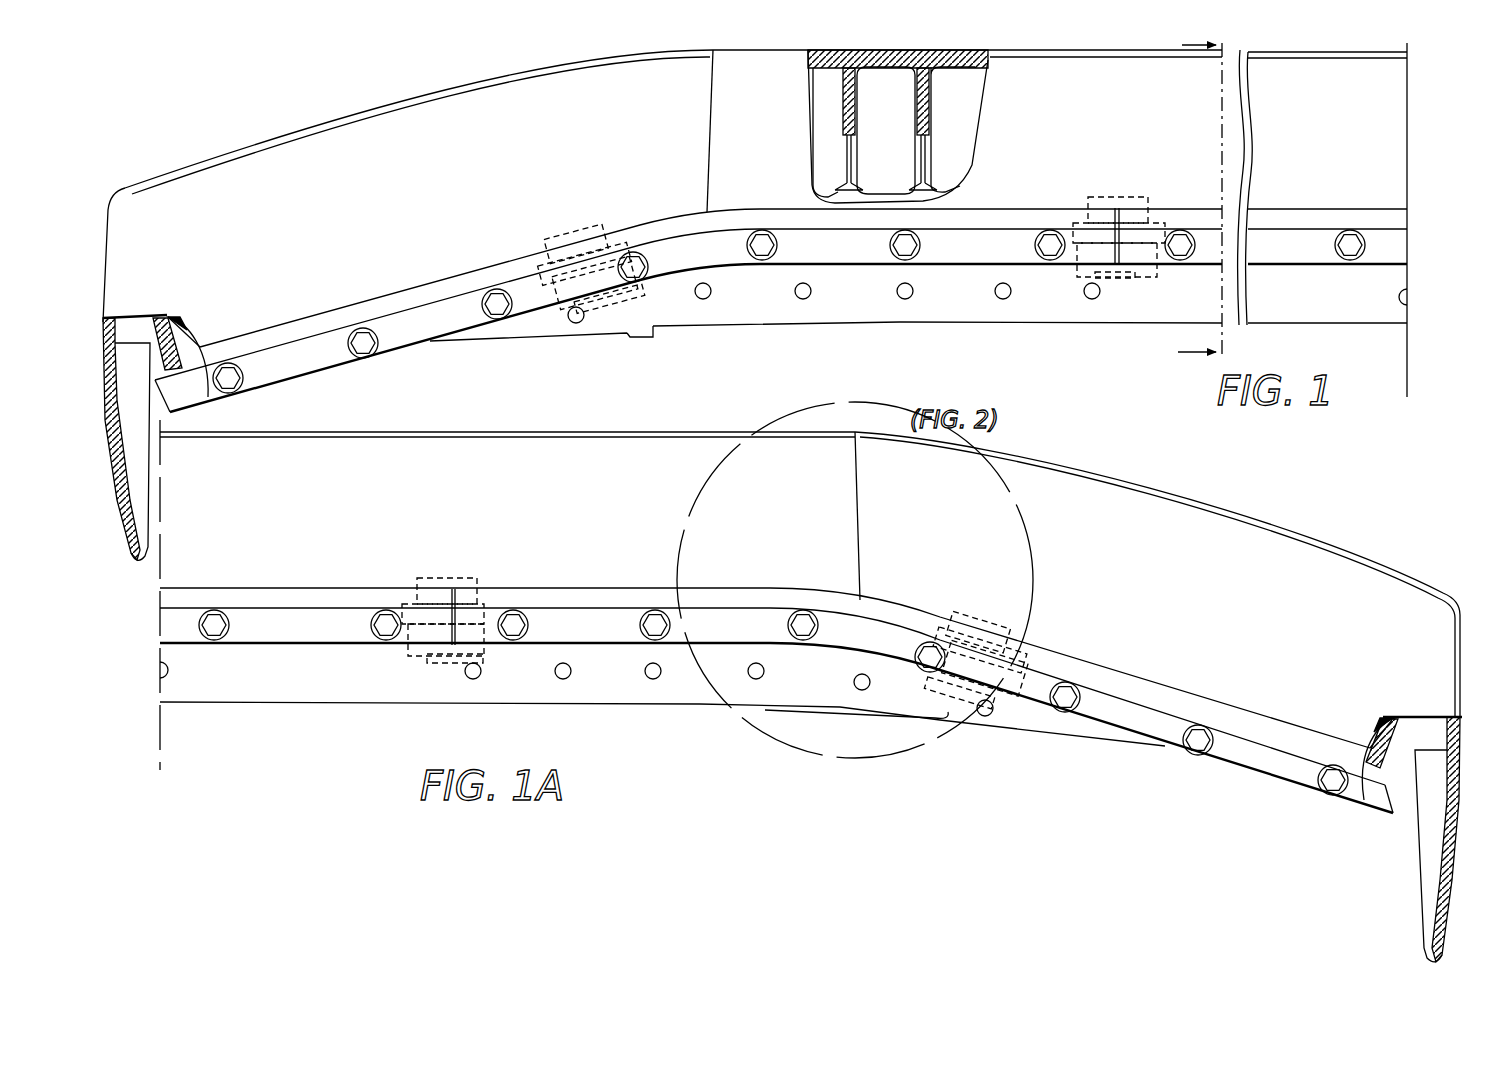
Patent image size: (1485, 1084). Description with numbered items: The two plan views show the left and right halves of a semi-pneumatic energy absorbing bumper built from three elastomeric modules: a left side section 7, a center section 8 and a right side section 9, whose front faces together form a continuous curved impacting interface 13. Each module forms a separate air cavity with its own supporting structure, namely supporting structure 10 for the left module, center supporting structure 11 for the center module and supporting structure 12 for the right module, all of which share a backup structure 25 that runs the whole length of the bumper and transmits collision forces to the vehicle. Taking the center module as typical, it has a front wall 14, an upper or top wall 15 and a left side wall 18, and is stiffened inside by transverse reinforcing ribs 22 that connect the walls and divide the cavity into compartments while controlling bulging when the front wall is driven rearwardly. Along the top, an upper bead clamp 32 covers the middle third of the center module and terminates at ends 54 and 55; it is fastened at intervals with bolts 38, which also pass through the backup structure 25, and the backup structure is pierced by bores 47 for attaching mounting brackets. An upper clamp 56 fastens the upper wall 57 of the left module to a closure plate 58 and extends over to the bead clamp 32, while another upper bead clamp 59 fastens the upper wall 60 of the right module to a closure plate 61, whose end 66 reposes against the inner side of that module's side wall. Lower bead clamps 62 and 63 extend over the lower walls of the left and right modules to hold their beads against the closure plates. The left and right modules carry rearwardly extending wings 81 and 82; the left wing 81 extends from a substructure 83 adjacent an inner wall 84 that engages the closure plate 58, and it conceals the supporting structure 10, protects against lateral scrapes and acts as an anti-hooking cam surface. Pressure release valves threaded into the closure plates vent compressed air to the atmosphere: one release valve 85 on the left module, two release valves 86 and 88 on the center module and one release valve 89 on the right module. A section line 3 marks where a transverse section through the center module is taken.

In FIG. 1, the section line 3- 3 is at (1200, 215).
In FIG. 1, the left side section 7 is at (449, 194).
In FIG. 1, the center section 8 is at (1334, 151).
In FIG. 1A, the center section 8 is at (514, 521).
In FIG. 1A, the right side section 9 is at (1194, 599).
In FIG. 1, the supporting structure 10 is at (845, 300).
In FIG. 1, the center supporting structure 11 is at (1332, 300).
In FIG. 1A, the center supporting structure 11 is at (352, 683).
In FIG. 1A, the supporting structure 12 is at (1002, 708).
In FIG. 1, the continuous curved impacting interface 13 is at (262, 112).
In FIG. 1A, the continuous curved impacting interface 13 is at (1252, 500).
In FIG. 1A, the front wall 14 is at (390, 432).
In FIG. 1A, the upper wall 15 is at (490, 452).
In FIG. 1, the left side wall 18 is at (710, 142).
In FIG. 1, the reinforcing ribs 22 is at (852, 133).
In FIG. 1, the backup structure 25 is at (1010, 316).
In FIG. 1A, the backup structure 25 is at (625, 696).
In FIG. 1, the upper bead clamp 32 is at (1262, 264).
In FIG. 1A, the upper bead clamp 32 is at (330, 632).
In FIG. 1, the bolts 38 is at (1338, 262).
In FIG. 1A, the bolts 38 is at (383, 616).
In FIG. 1, the bores 47 is at (712, 290).
In FIG. 1A, the bores 47 is at (170, 670).
In FIG. 1, the end of upper bead clamp 54 is at (1118, 218).
In FIG. 1A, the end of upper bead clamp 55 is at (455, 600).
In FIG. 1, the upper clamp 56 is at (305, 372).
In FIG. 1, the upper wall 57 is at (335, 128).
In FIG. 1, the closure plate 58 is at (200, 352).
In FIG. 1A, the upper bead clamp 59 is at (1302, 770).
In FIG. 1A, the upper wall 60 is at (1137, 503).
In FIG. 1A, the closure plate 61 is at (1370, 732).
In FIG. 1, the lower bead clamp 62 is at (192, 396).
In FIG. 1A, the lower bead clamp 63 is at (1386, 812).
In FIG. 1A, the end of closure plate 66 is at (530, 627).
In FIG. 1, the wing 81 is at (130, 490).
In FIG. 1A, the wing 82 is at (1430, 882).
In FIG. 1, the substructure 83 is at (158, 316).
In FIG. 1, the inner wall 84 is at (188, 330).
In FIG. 1, the release valve 85 is at (628, 303).
In FIG. 1, the release valve 86 is at (1148, 277).
In FIG. 1A, the release valve 88 is at (412, 652).
In FIG. 1A, the release valve 89 is at (935, 690).